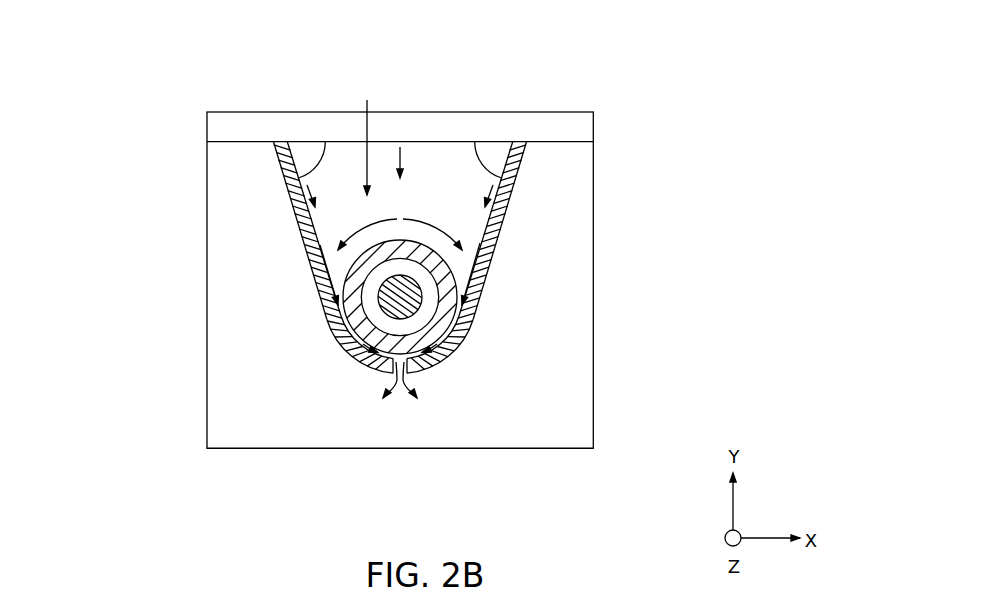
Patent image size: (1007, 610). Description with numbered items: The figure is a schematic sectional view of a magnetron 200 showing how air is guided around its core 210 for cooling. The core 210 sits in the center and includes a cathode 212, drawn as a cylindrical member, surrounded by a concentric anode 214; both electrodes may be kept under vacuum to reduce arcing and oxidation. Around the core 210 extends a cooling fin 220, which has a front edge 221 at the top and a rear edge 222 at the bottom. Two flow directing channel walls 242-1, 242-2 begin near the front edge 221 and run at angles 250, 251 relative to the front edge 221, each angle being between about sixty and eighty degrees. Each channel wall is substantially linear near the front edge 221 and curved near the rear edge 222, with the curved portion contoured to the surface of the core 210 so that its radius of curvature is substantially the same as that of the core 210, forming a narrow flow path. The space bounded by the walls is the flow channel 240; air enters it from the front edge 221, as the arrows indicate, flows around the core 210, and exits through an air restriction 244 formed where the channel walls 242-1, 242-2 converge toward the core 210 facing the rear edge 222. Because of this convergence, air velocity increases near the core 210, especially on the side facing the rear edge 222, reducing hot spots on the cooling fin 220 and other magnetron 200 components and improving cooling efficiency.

The magnetron 200 is at (135, 97).
The core 210 is at (462, 267).
The cathode 212 is at (360, 357).
The anode 214 is at (333, 287).
The cooling fin 220 is at (547, 345).
The front edge 221 is at (507, 129).
The rear edge 222 is at (423, 452).
The flow channel 240 is at (400, 141).
The channel wall 242-1 is at (290, 205).
The channel wall 242-2 is at (505, 222).
The air restriction 244 is at (397, 401).
The angle 250 is at (322, 163).
The angle 251 is at (480, 163).